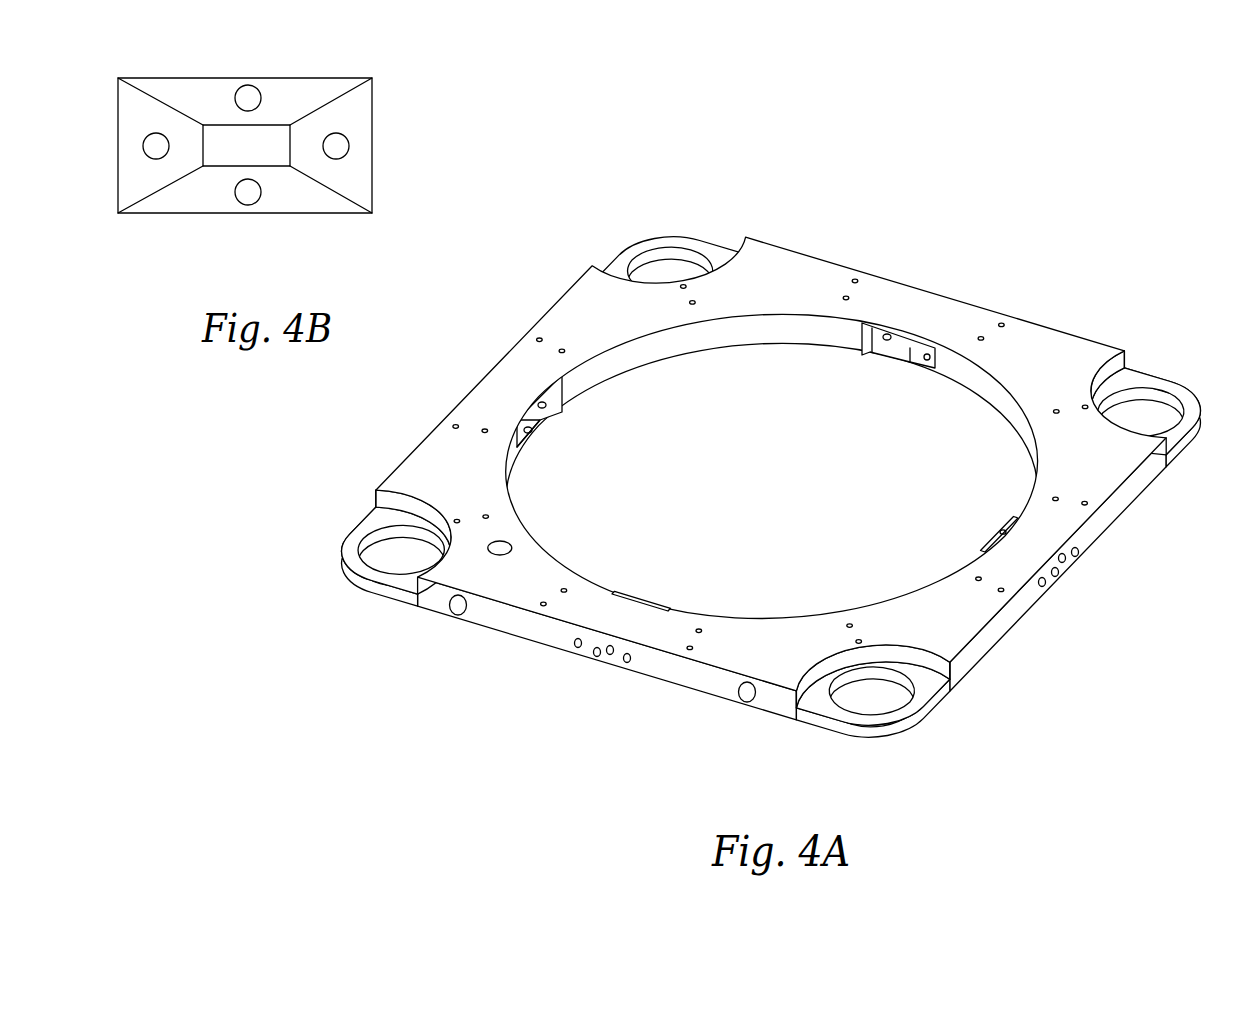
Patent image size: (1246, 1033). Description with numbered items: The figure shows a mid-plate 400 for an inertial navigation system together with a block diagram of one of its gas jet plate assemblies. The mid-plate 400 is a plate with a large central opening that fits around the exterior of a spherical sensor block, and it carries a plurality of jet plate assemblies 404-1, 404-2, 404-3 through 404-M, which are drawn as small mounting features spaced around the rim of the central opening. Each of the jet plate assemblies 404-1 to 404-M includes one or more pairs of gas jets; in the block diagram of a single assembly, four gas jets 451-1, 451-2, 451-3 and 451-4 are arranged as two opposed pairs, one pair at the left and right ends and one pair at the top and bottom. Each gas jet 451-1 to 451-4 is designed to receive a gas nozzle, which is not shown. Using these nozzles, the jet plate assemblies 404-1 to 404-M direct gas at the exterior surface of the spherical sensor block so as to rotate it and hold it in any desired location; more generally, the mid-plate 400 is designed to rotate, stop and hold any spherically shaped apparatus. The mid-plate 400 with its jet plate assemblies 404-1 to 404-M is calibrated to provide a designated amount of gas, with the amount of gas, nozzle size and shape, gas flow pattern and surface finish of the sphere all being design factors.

In FIG. 4A, the mid-plate 400 is at (771, 494).
In FIG. 4B, the jet plate assembly 404-1 is at (243, 148).
In FIG. 4A, the jet plate assembly 404-1 is at (557, 417).
In FIG. 4A, the jet plate assembly 404-2 is at (887, 360).
In FIG. 4A, the jet plate assembly 404-3 is at (997, 537).
In FIG. 4A, the jet plate assembly 404-M is at (642, 602).
In FIG. 4B, the gas jet 451-1 is at (138, 144).
In FIG. 4B, the gas jet 451-2 is at (243, 84).
In FIG. 4B, the gas jet 451-3 is at (353, 143).
In FIG. 4B, the gas jet 451-4 is at (253, 213).